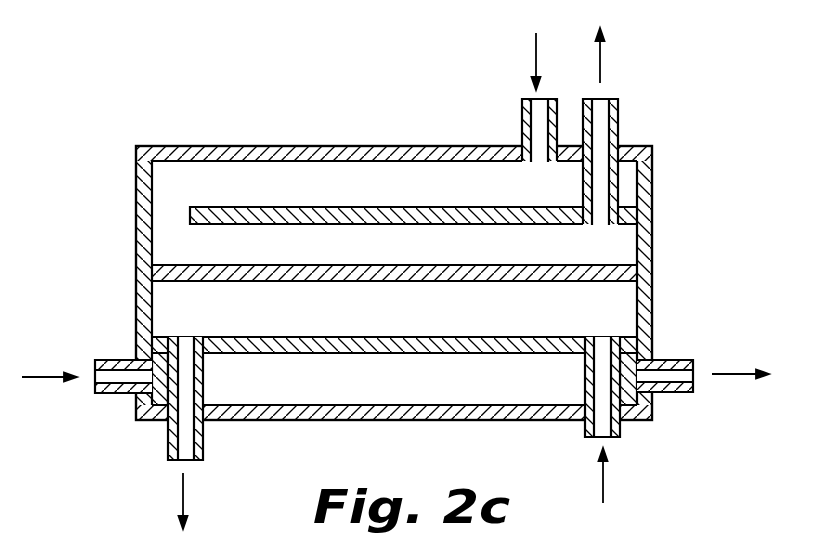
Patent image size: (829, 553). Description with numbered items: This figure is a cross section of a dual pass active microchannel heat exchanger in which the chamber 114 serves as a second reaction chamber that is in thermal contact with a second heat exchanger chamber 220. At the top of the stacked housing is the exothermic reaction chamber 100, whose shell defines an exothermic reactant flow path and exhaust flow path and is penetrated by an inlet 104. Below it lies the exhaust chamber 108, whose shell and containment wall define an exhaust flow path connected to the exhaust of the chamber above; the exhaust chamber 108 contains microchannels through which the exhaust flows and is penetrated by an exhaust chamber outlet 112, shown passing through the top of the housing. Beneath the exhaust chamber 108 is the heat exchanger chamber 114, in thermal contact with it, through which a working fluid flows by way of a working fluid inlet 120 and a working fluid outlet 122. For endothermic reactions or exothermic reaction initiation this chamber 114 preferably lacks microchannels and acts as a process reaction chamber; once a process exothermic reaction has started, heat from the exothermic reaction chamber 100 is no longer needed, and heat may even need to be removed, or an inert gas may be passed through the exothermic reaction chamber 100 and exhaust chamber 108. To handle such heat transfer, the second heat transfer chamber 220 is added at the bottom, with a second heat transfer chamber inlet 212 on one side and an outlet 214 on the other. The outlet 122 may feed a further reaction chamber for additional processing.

The exothermic reaction chamber 100 is at (395, 196).
The inlet 104 is at (522, 128).
The exhaust chamber 108 is at (395, 257).
The exhaust chamber outlet 112 is at (618, 117).
The heat exchanger chamber 114 is at (395, 322).
The working fluid inlet 120 is at (620, 422).
The working fluid outlet 122 is at (170, 435).
The second heat transfer chamber inlet 212 is at (108, 393).
The second heat transfer chamber outlet 214 is at (675, 358).
The second heat exchanger chamber 220 is at (395, 395).